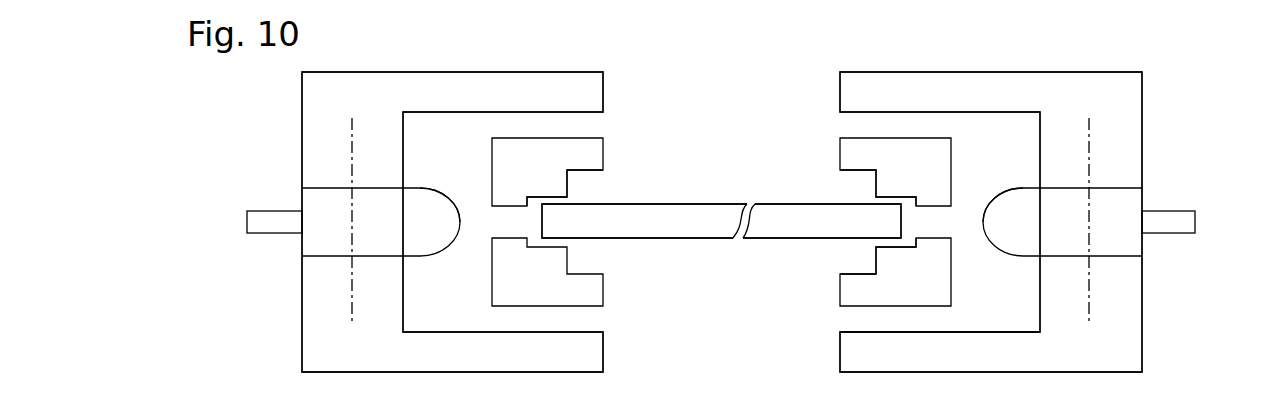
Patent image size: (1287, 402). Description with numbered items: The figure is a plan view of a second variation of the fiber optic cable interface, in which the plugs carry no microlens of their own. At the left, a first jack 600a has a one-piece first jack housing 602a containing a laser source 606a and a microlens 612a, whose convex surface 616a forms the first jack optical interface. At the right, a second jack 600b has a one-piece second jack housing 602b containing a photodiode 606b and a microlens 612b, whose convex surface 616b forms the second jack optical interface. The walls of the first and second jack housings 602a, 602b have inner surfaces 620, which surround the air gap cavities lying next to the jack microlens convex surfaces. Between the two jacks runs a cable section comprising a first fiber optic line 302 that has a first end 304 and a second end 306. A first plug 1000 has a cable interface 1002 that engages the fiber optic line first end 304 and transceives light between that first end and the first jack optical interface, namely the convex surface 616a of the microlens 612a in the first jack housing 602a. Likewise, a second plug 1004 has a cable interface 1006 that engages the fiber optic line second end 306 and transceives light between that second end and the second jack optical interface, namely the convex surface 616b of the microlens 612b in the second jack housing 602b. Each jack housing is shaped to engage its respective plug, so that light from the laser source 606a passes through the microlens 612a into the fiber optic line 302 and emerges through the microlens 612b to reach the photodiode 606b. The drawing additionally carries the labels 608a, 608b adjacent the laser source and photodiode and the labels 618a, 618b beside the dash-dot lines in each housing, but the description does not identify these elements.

The first jack 600a is at (510, 56).
The second jack 600b is at (963, 59).
The first jack housing 602a is at (452, 222).
The second jack housing 602b is at (991, 222).
The laser source 606a is at (352, 222).
The photodiode 606b is at (1091, 221).
The optical fiber of first optical assembly 608a is at (275, 210).
The optical fiber of second optical assembly 608b is at (1155, 210).
The microlens 612a is at (431, 222).
The microlens 612b is at (1011, 222).
The convex surface 616a is at (438, 186).
The convex surface 616b is at (988, 193).
The focal plane of first optical assembly 618a is at (348, 293).
The focal plane of second optical assembly 618b is at (1090, 322).
The inner surfaces 620 is at (963, 326).
The first fiber optic line 302 is at (787, 204).
The first end 304 is at (644, 221).
The second end 306 is at (822, 221).
The first plug 1000 is at (584, 148).
The cable interface 1002 is at (602, 187).
The second plug 1004 is at (865, 148).
The cable interface 1006 is at (850, 254).